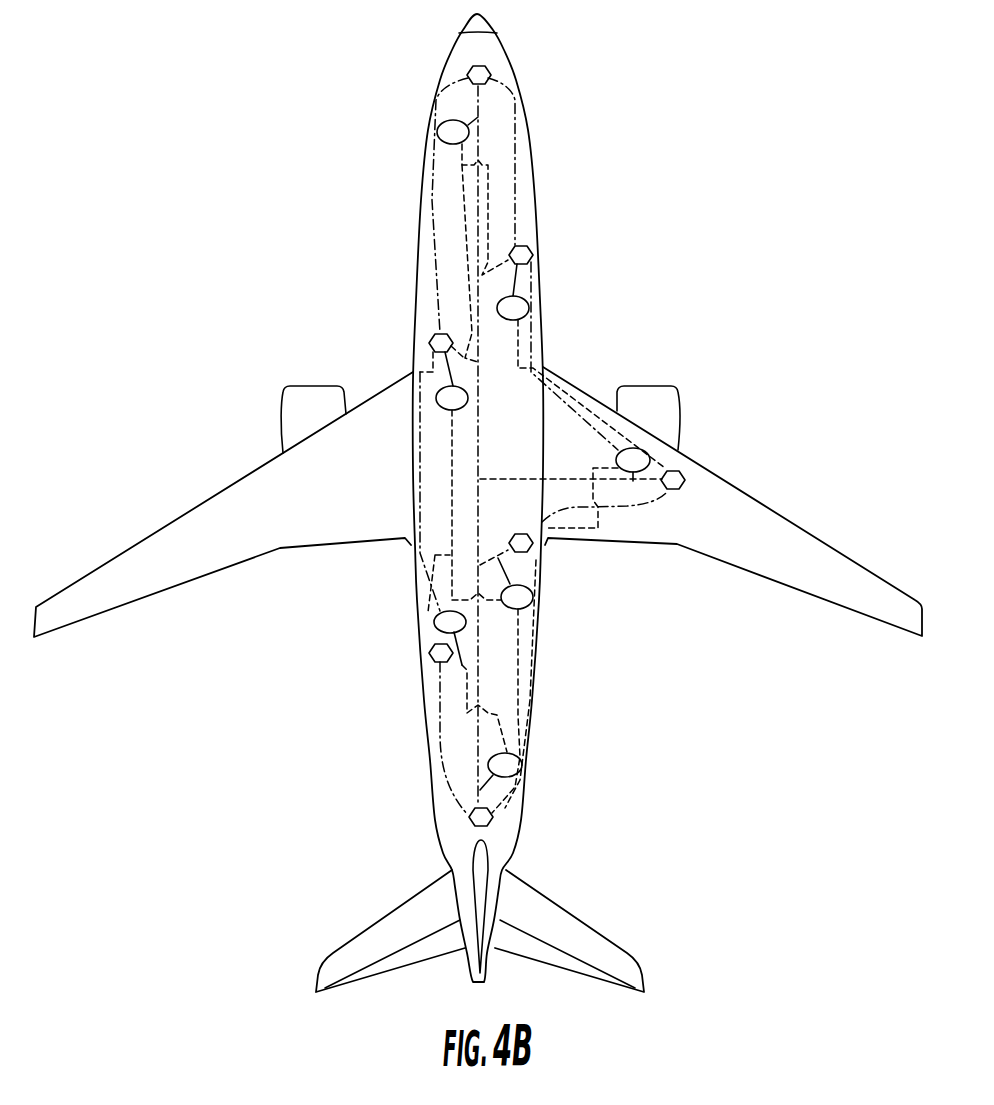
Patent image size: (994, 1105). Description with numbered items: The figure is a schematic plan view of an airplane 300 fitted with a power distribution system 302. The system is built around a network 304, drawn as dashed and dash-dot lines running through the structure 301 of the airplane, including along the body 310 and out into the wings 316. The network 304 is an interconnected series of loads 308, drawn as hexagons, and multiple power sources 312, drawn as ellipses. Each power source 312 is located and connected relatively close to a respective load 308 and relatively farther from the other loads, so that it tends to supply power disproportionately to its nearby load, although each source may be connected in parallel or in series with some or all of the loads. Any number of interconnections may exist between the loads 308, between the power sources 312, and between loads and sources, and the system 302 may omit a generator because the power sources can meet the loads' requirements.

The airplane 300 is at (690, 230).
The structure 301 is at (400, 550).
The power distribution system 302 is at (456, 728).
The network 304 is at (452, 258).
The loads 308 is at (491, 71).
The body 310 is at (525, 665).
The power sources 312 is at (437, 133).
The wings 316 is at (630, 542).